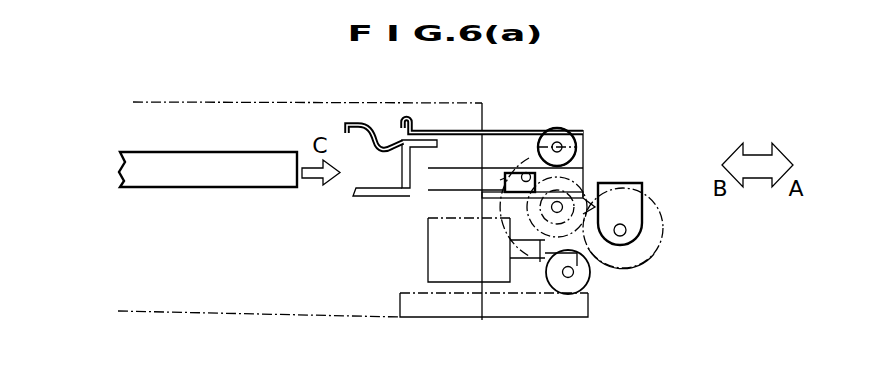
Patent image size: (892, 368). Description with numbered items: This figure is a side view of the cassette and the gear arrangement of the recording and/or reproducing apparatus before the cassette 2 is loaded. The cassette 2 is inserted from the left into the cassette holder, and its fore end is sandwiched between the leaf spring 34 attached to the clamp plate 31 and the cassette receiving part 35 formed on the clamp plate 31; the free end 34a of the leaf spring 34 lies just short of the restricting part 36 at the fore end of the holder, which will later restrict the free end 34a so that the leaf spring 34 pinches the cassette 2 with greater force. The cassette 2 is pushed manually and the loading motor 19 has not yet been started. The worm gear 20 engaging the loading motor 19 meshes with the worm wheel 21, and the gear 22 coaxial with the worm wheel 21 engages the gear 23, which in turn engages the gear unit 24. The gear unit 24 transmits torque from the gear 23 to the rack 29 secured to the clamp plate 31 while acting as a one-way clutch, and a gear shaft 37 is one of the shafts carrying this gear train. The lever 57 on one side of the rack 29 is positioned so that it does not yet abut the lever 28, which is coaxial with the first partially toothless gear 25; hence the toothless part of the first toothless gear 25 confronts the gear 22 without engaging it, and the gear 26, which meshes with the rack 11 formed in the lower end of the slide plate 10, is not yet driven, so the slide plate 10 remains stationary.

The cassette 2 is at (137, 157).
The slide plate 10 is at (207, 123).
The rack 11 is at (571, 313).
The loading motor 19 is at (443, 260).
The worm gear 20 is at (525, 262).
The worm wheel 21 is at (543, 246).
The gear 22 is at (573, 193).
The gear 23 is at (500, 199).
The gear unit 24 is at (574, 126).
The first partially toothless gear 25 is at (640, 263).
The gear 26 is at (590, 254).
The lever 28 is at (641, 181).
The rack 29 is at (585, 158).
The clamp plate 31 is at (500, 147).
The leaf spring 34 is at (392, 140).
The free end 34a is at (350, 120).
The cassette receiving part 35 is at (358, 200).
The restricting part 36 is at (415, 117).
The gear shaft 37 is at (557, 142).
The lever 57 is at (505, 178).